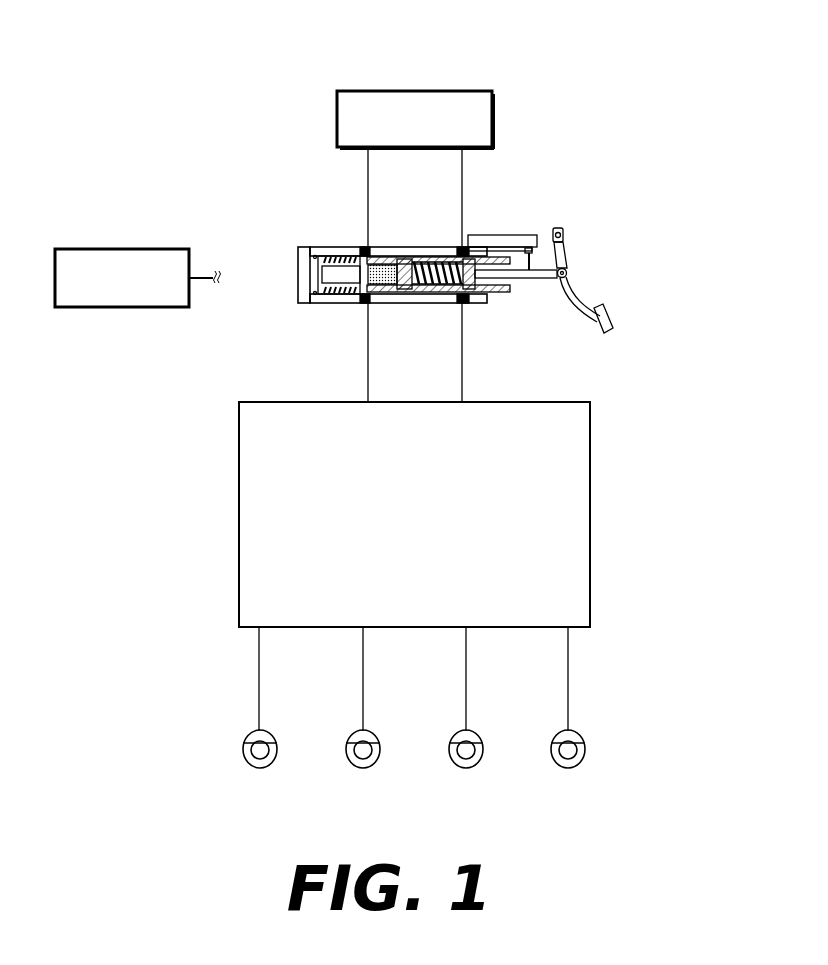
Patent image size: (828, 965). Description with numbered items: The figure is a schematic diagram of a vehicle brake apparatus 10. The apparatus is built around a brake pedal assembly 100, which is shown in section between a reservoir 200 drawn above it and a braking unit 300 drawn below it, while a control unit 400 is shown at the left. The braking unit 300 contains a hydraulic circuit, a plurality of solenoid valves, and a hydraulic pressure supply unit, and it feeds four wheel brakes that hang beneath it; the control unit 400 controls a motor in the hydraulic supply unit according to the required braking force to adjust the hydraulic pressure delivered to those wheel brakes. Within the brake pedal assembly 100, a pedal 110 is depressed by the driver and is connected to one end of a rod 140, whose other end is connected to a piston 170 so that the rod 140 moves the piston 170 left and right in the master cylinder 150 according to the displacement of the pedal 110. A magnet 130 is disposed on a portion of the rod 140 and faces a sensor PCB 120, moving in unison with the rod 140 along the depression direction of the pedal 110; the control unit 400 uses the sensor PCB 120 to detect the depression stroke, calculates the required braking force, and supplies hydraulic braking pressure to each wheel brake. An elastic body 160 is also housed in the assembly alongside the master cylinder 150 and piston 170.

The brake apparatus 10 is at (130, 30).
The brake pedal assembly 100 is at (583, 243).
The pedal 110 is at (572, 292).
The sensor PCB 120 is at (477, 242).
The magnet 130 is at (535, 252).
The rod 140 is at (522, 278).
The master cylinder 150 is at (333, 250).
The elastic body 160 is at (418, 265).
The piston 170 is at (472, 286).
The reservoir 200 is at (512, 115).
The braking unit 300 is at (603, 487).
The control unit 400 is at (147, 226).